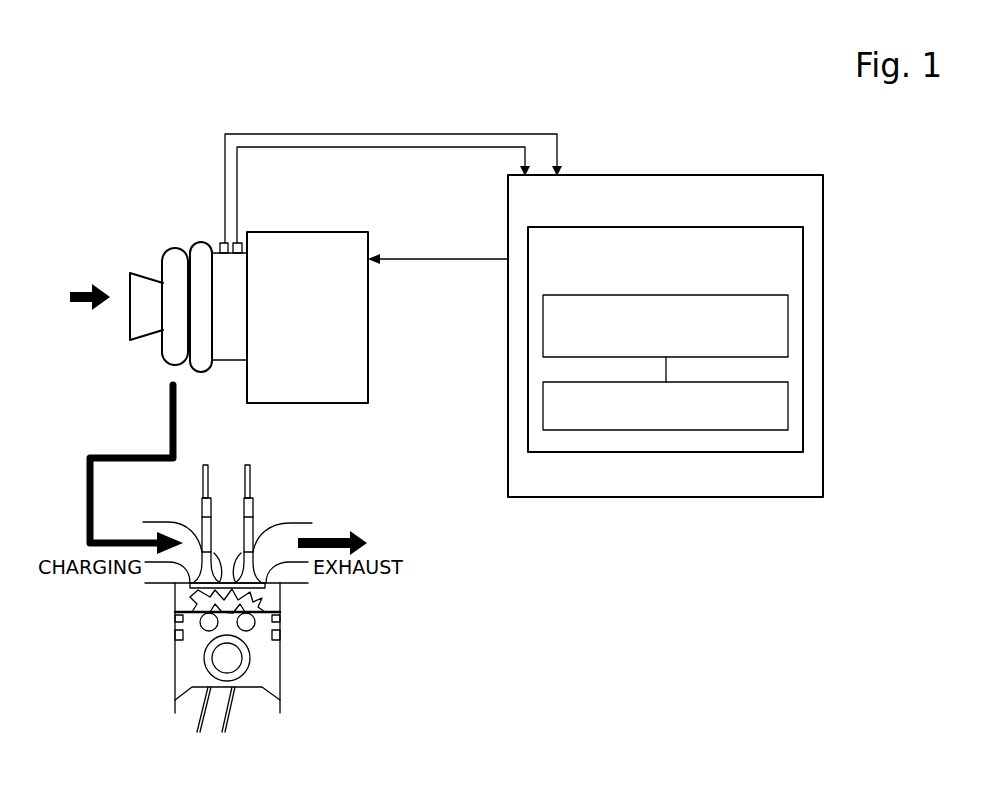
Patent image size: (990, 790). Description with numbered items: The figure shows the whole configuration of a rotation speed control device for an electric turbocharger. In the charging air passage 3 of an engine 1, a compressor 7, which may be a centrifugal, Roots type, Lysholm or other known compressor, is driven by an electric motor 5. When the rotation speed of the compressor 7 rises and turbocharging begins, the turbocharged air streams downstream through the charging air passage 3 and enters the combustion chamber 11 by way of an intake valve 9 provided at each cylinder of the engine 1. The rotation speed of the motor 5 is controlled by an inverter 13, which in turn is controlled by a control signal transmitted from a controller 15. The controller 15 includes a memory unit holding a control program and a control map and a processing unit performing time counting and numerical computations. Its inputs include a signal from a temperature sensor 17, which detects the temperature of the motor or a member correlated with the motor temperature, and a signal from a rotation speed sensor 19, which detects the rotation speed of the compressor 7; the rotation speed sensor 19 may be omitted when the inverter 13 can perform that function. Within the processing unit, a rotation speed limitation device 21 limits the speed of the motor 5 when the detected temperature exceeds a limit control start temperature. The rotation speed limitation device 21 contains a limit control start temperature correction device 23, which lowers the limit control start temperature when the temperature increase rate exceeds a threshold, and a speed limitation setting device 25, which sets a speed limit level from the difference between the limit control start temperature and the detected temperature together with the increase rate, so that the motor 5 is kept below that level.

The engine 1 is at (202, 585).
The charging air passage 3 is at (158, 520).
The electric motor 5 is at (223, 360).
The compressor 7 is at (172, 248).
The intake valve 9 is at (210, 477).
The combustion chamber 11 is at (180, 599).
The inverter 13 is at (368, 372).
The controller 15 is at (793, 175).
The temperature sensor 17 is at (243, 252).
The rotation speed sensor 19 is at (221, 245).
The rotation speed limitation device 21 is at (803, 254).
The limit control start temperature correction device 23 is at (788, 318).
The speed limitation setting device 25 is at (788, 403).